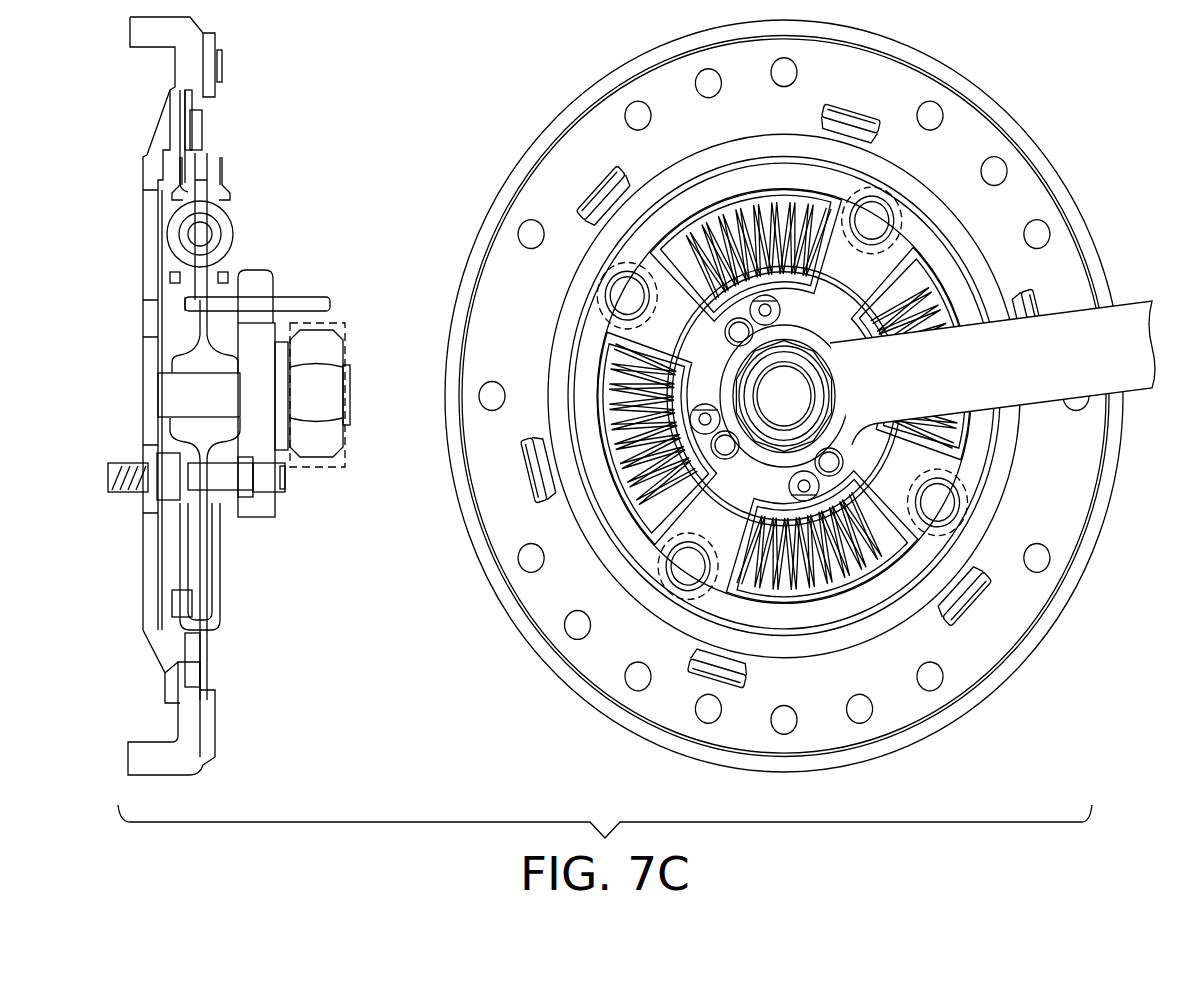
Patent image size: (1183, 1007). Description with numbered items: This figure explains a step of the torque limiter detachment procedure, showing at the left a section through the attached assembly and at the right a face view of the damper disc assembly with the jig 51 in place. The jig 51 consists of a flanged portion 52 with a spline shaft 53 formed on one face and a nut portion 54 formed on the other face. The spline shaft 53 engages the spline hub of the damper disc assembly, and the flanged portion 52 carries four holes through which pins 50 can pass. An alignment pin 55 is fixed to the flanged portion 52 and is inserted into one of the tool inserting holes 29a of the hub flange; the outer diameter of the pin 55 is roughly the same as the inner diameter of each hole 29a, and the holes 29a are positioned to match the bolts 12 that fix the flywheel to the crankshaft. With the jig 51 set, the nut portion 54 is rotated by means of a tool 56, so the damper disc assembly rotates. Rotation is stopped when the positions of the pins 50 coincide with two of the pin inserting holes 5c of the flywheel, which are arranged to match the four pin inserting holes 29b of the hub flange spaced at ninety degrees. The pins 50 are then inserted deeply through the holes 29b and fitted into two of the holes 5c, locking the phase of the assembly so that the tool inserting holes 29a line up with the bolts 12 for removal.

The pin inserting hole 5c is at (150, 298).
The bolt 12 is at (113, 490).
The hole 29a is at (187, 483).
The hole 29b is at (190, 305).
The pin 50 is at (322, 303).
The jig 51 is at (687, 325).
The flanged portion 52 is at (263, 267).
The spline shaft 53 is at (177, 400).
The nut portion 54 is at (333, 388).
The alignment pin 55 is at (263, 482).
The tool 56 is at (1120, 303).